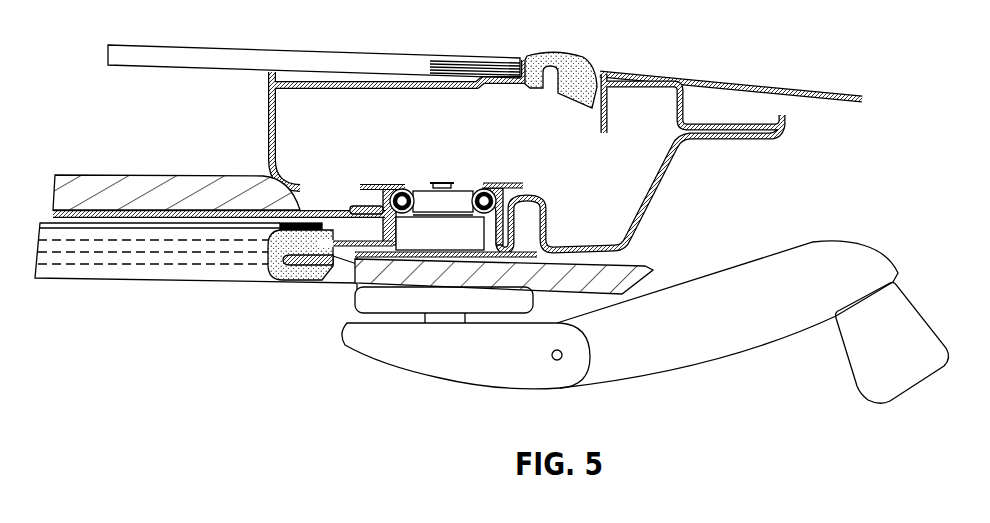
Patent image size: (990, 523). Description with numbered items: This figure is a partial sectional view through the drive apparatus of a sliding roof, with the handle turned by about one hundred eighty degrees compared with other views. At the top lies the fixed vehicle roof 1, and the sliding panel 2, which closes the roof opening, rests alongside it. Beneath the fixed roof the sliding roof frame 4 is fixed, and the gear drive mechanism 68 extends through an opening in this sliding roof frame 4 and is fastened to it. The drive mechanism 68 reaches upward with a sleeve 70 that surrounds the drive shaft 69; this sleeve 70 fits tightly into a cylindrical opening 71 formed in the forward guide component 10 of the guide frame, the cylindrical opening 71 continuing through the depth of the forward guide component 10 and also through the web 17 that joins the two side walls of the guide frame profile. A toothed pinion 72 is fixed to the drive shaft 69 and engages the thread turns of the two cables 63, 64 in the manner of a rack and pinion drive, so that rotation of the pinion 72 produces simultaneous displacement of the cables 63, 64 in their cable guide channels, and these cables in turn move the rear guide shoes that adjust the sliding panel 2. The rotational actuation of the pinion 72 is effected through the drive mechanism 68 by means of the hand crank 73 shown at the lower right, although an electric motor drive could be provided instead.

The fixed vehicle roof 1 is at (771, 88).
The sliding panel 2 is at (333, 58).
The sliding roof frame 4 is at (676, 180).
The forward guide component 10 is at (369, 176).
The web 17 is at (394, 244).
The cable 63 is at (392, 200).
The cable 64 is at (505, 183).
The gear drive mechanism 68 is at (367, 300).
The drive shaft 69 is at (438, 182).
The sleeve 70 is at (450, 233).
The cylindrical opening 71 is at (406, 189).
The toothed pinion 72 is at (452, 200).
The hand crank 73 is at (763, 327).